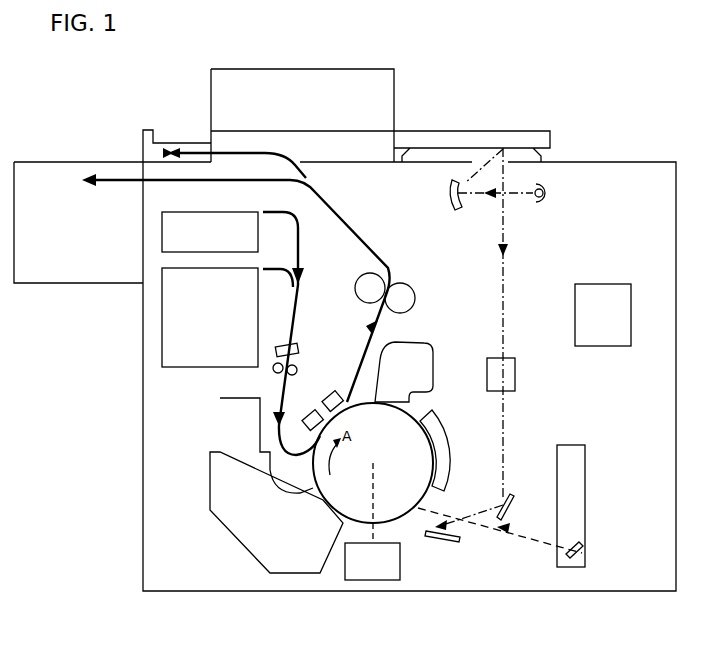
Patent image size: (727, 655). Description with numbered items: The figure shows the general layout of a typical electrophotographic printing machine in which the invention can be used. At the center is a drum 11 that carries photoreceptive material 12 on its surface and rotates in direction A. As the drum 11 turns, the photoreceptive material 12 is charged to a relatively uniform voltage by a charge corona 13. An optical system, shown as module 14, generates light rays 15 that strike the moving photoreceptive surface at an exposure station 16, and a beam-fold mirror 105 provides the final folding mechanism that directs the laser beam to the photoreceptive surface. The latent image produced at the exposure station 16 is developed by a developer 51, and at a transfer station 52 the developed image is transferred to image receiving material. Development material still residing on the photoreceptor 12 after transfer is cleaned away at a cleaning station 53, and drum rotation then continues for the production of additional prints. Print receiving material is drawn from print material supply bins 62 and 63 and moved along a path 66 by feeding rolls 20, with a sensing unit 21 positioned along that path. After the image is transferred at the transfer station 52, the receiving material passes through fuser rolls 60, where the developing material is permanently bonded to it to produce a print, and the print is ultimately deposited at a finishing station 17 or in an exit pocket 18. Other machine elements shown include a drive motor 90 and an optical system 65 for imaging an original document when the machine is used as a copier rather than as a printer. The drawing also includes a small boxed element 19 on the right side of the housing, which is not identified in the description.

The drum 11 is at (406, 463).
The photoreceptive material 12 is at (452, 440).
The charge corona 13 is at (446, 443).
The optical system module 14 is at (578, 488).
The light rays 15 is at (535, 539).
The exposure station 16 is at (415, 515).
The finishing station 17 is at (62, 178).
The exit pocket 18 is at (165, 148).
The control unit 19 is at (601, 284).
The feeding rolls 20 is at (273, 371).
The sensing unit 21 is at (294, 343).
The developer 51 is at (230, 512).
The transfer station 52 is at (312, 398).
The cleaning station 53 is at (418, 351).
The fuser rolls 60 is at (395, 271).
The print material supply bin 62 is at (192, 358).
The print material supply bin 63 is at (202, 224).
The optical system 65 is at (515, 360).
The path 66 is at (297, 288).
The drive motor 90 is at (378, 578).
The beam-fold mirror 105 is at (583, 550).